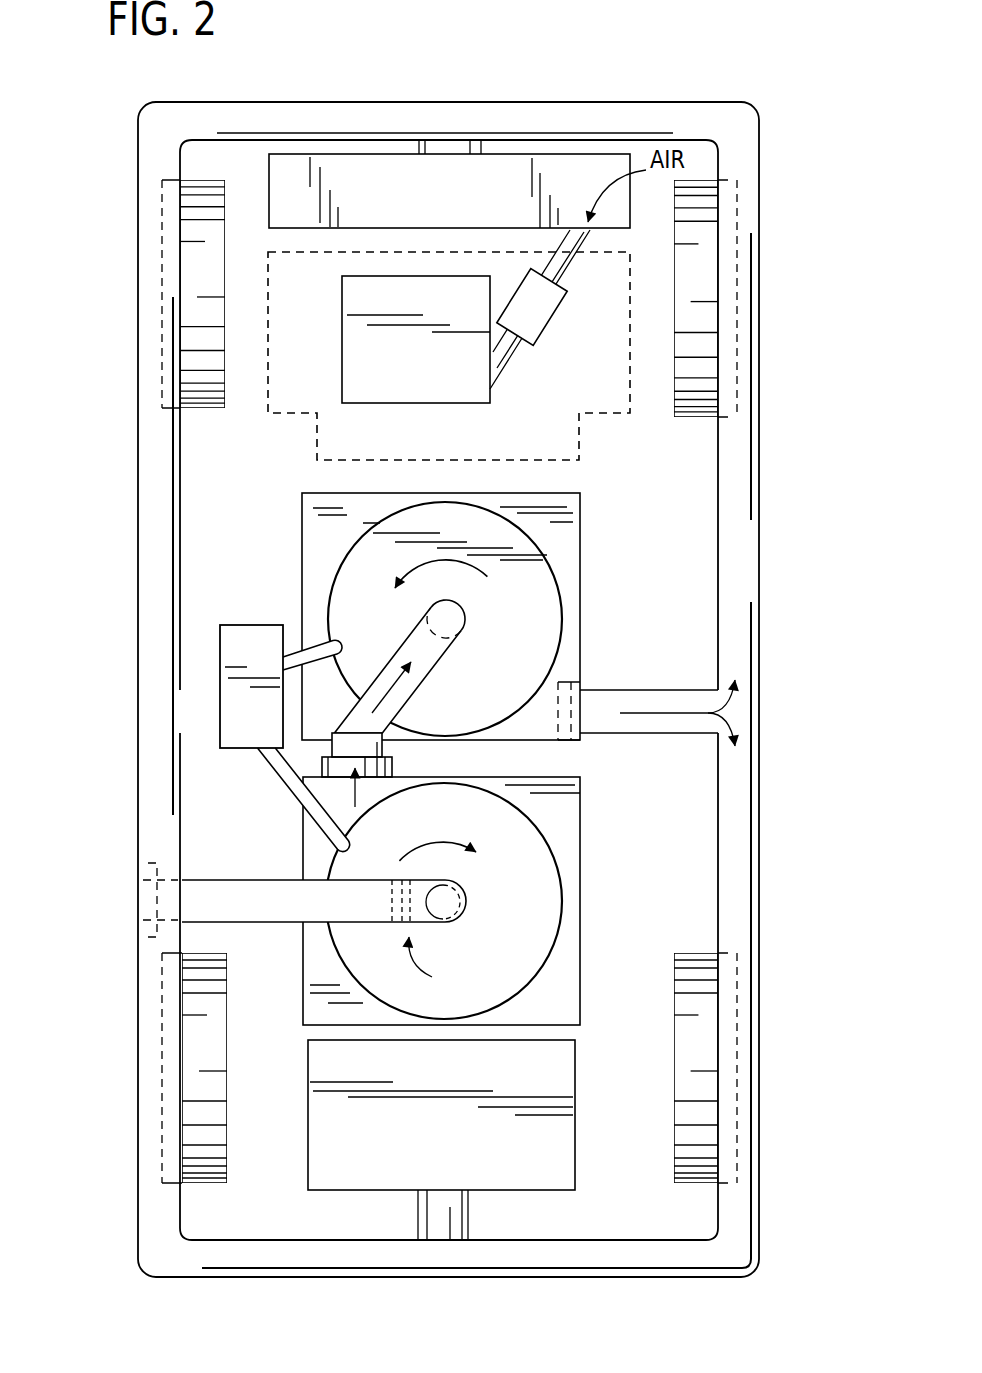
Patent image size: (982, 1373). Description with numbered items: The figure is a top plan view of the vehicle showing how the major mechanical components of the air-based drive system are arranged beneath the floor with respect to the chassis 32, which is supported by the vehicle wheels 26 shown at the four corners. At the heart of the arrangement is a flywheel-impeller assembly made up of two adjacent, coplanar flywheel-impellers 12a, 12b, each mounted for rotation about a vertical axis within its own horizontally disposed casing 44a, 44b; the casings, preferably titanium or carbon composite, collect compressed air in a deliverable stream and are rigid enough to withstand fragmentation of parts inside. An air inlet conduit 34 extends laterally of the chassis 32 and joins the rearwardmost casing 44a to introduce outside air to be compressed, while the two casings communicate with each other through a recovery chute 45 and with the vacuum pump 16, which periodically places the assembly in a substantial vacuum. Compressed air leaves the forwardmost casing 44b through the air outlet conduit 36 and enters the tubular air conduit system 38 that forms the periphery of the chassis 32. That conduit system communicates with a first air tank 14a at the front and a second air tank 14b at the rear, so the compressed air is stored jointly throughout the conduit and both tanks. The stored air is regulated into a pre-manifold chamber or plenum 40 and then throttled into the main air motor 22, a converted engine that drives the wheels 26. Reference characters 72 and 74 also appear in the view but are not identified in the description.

The flywheel-impeller 12a is at (547, 922).
The flywheel-impeller 12b is at (538, 641).
The first air tank 14a is at (413, 202).
The second air tank 14b is at (450, 1160).
The vacuum pump 16 is at (265, 630).
The main air motor 22 is at (423, 407).
The vehicle wheels 26 is at (190, 278).
The chassis 32 is at (764, 487).
The air inlet conduit 34 is at (236, 883).
The air outlet conduit 36 is at (645, 690).
The tubular air conduit system 38 is at (761, 760).
The pre-manifold regulated chamber 40 is at (544, 339).
The casing 44a is at (567, 876).
The casing 44b is at (562, 567).
The recovery chute 45 is at (383, 757).
The shaft bearing 72 is at (130, 896).
The rotation direction arrow 74 is at (439, 968).